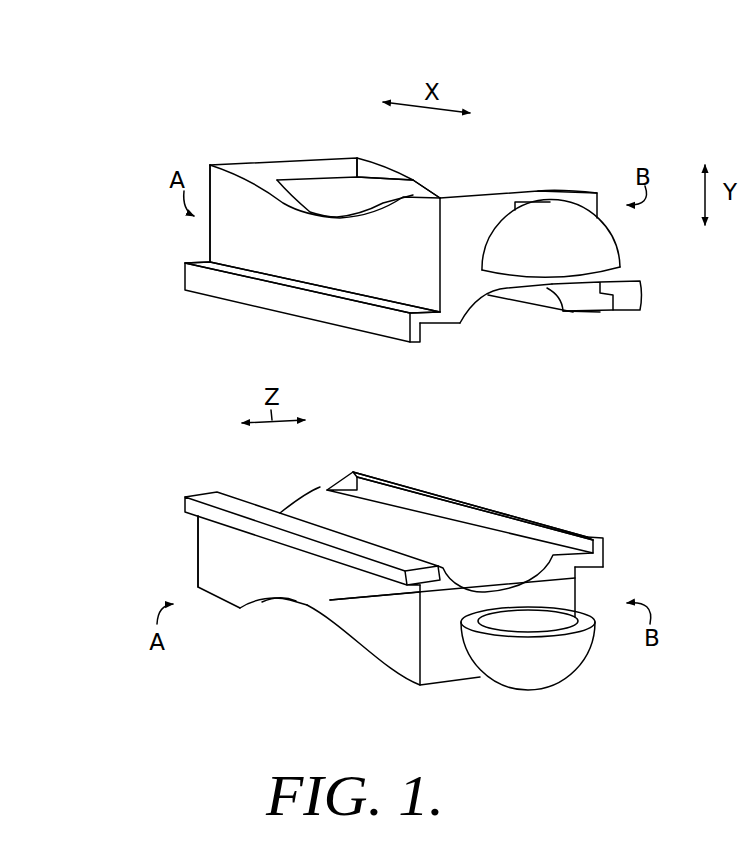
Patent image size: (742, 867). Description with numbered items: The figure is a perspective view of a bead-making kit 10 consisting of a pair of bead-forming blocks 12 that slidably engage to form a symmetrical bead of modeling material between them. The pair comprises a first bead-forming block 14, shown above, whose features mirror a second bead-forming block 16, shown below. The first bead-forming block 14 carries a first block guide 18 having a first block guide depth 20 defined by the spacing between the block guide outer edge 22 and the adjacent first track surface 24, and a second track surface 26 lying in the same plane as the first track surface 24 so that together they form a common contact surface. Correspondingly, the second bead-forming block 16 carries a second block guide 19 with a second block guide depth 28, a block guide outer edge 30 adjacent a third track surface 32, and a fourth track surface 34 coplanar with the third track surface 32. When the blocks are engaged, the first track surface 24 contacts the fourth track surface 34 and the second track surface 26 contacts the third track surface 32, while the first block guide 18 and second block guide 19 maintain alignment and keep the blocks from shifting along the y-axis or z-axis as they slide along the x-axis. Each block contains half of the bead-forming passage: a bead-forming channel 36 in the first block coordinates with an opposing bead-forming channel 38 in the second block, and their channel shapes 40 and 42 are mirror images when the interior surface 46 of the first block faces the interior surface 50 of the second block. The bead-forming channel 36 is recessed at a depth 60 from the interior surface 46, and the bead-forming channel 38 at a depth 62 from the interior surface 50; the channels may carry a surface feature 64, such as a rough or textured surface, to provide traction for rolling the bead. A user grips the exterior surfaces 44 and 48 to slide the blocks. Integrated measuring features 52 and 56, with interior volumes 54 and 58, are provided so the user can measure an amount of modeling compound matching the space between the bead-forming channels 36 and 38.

The bead-making kit 10 is at (252, 111).
The pair of bead-forming blocks 12 is at (140, 238).
The first bead-forming block 14 is at (415, 178).
The second bead-forming block 16 is at (355, 628).
The first block guide 18 is at (360, 318).
The second block guide 19 is at (375, 472).
The first block guide depth 20 is at (176, 259).
The block guide outer edge 22 is at (417, 346).
The first track surface 24 is at (447, 328).
The second track surface 26 is at (594, 320).
The second block guide depth 28 is at (612, 535).
The block guide outer edge 30 is at (600, 534).
The third track surface 32 is at (514, 534).
The fourth track surface 34 is at (200, 494).
The bead-forming channel 36 is at (518, 294).
The bead-forming channel 38 is at (305, 501).
The channel shape 40 is at (477, 314).
The channel shape 42 is at (470, 587).
The exterior surface 44 is at (324, 148).
The interior surface 46 is at (269, 310).
The exterior surface 48 is at (293, 616).
The interior surface 50 is at (457, 487).
The integrated measuring feature 52 is at (599, 250).
The interior volume 54 is at (551, 291).
The integrated measuring feature 56 is at (544, 684).
The interior volume 58 is at (556, 616).
The depth 60 is at (641, 284).
The depth 62 is at (317, 597).
The surface feature 64 is at (408, 540).